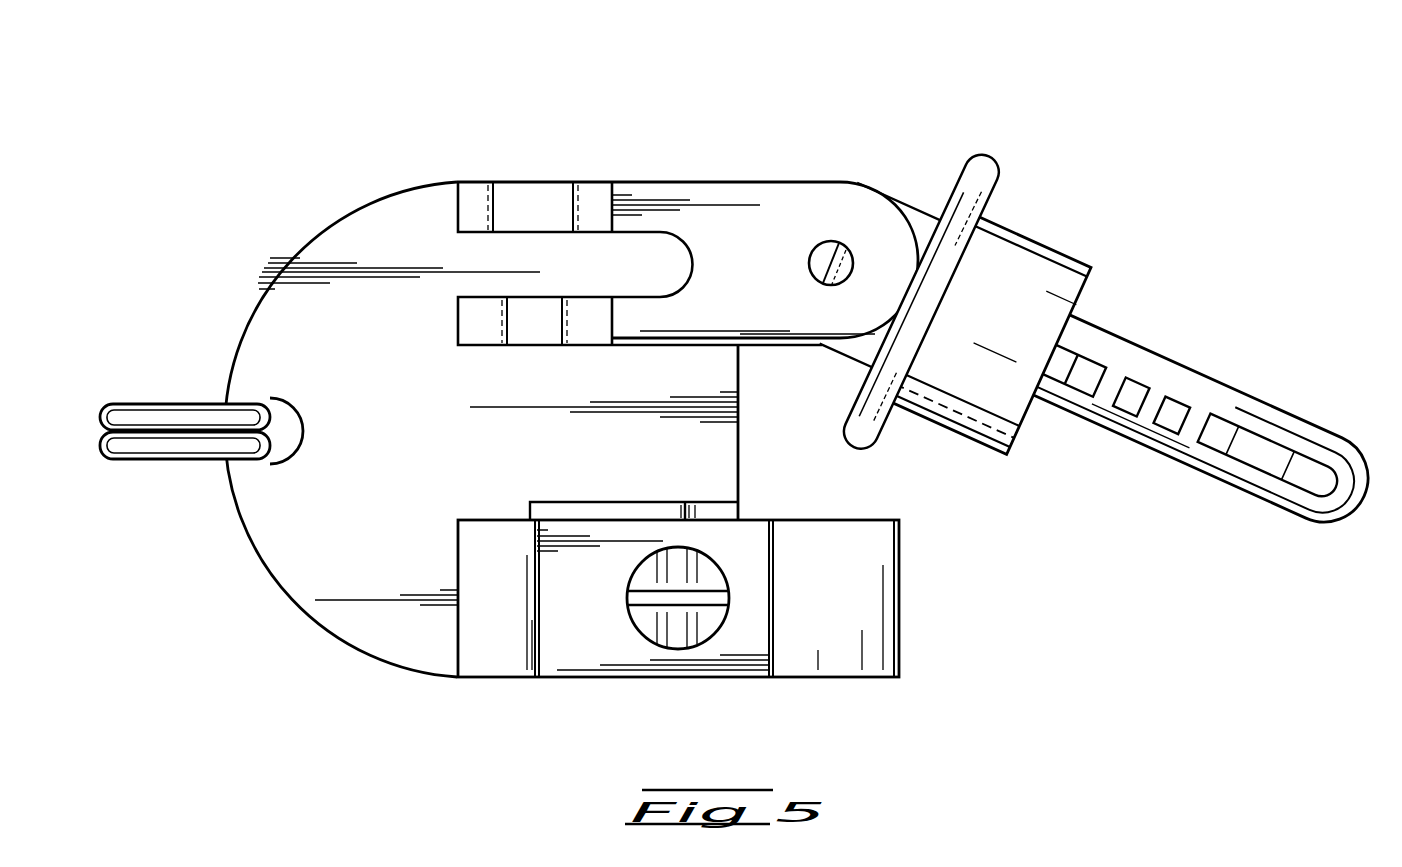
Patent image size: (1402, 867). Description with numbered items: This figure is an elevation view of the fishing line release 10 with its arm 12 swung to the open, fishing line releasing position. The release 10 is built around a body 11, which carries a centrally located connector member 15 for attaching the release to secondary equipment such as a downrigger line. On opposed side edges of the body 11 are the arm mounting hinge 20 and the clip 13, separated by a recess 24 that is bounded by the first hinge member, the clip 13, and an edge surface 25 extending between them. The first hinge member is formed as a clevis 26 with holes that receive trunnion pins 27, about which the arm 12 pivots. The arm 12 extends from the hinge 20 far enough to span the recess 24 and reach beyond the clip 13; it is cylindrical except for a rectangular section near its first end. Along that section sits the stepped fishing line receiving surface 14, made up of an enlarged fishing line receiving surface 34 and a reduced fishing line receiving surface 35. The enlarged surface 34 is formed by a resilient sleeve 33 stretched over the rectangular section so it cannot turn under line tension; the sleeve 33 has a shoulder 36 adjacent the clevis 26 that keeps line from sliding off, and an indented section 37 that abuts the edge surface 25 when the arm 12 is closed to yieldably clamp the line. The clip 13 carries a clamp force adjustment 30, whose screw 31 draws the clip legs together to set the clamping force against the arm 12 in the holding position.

The release 10 is at (741, 380).
The body 11 is at (283, 612).
The arm 12 is at (1268, 390).
The clip 13 is at (906, 606).
The stepped fishing line receiving surface 14 is at (1093, 245).
The connector member 15 is at (285, 430).
The hinge 20 is at (860, 178).
The recess 24 is at (773, 462).
The edge surface 25 is at (740, 440).
The clevis 26 is at (820, 207).
The trunnion pins 27 is at (820, 265).
The clamp force adjustment 30 is at (628, 632).
The screw 31 is at (678, 628).
The resilient sleeve 33 is at (1025, 260).
The enlarged fishing line receiving surface 34 is at (988, 446).
The reduced fishing line receiving surface 35 is at (1127, 343).
The shoulder 36 is at (985, 165).
The indented section 37 is at (945, 408).